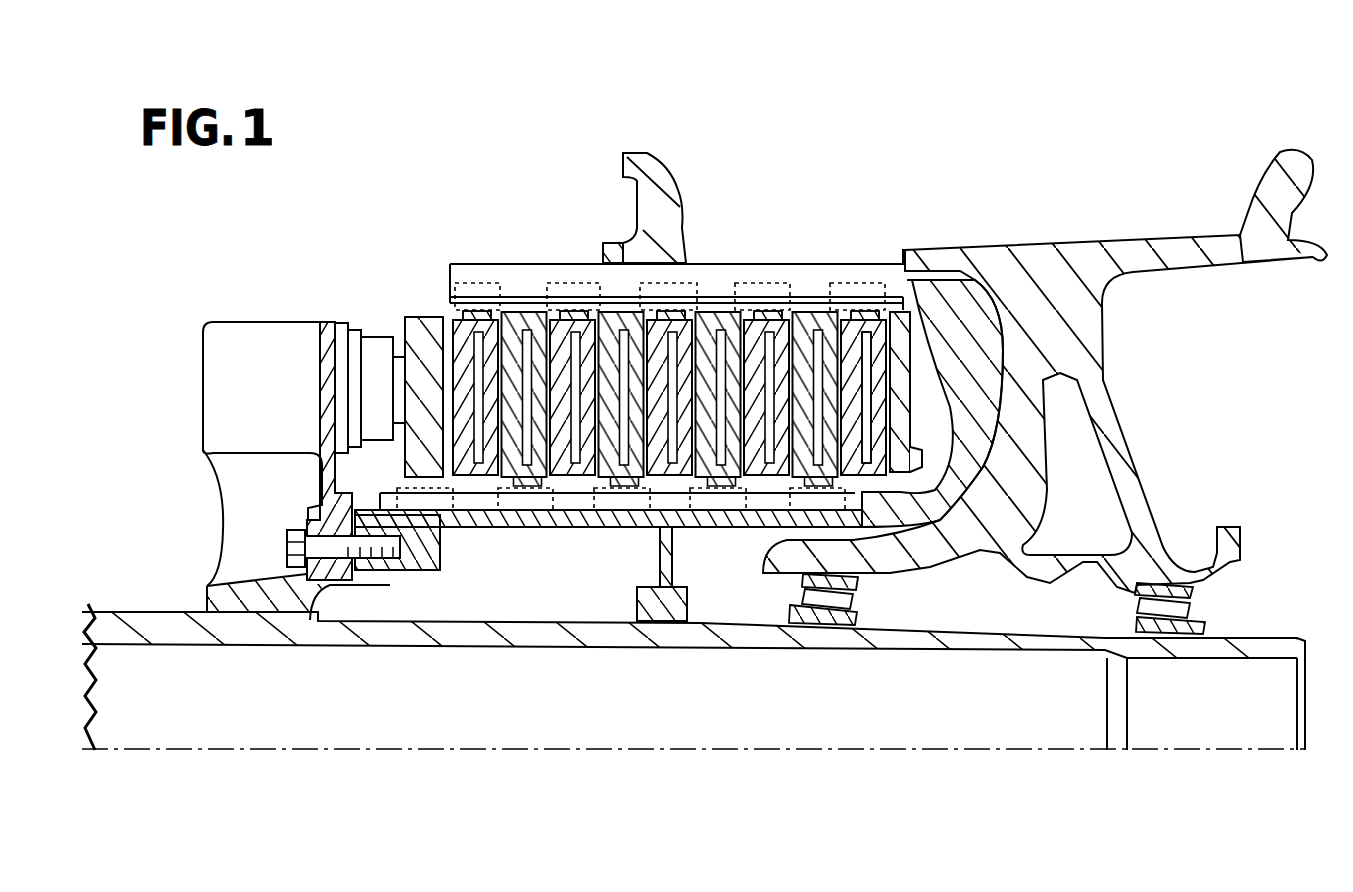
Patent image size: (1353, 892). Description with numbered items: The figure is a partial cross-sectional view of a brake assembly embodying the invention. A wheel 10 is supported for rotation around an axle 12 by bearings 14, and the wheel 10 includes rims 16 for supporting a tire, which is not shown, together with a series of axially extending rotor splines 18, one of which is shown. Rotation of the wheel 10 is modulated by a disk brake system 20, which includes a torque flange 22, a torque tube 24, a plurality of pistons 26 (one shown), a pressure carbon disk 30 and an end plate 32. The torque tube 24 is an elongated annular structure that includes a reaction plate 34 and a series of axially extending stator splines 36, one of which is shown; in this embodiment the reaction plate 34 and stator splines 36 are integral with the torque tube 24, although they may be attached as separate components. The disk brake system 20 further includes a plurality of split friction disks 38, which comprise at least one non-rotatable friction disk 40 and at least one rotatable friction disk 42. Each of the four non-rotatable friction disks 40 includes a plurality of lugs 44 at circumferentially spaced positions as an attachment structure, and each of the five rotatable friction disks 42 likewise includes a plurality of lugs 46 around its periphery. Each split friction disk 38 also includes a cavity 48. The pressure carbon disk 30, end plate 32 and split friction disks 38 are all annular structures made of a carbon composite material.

The wheel 10 is at (1136, 206).
The axle 12 is at (1005, 634).
The bearings 14 is at (870, 603).
The rims 16 is at (670, 166).
The rotor splines 18 is at (620, 273).
The disk brake system 20 is at (372, 282).
The torque flange 22 is at (320, 508).
The torque tube 24 is at (517, 538).
The pistons 26 is at (378, 343).
The pressure carbon disk 30 is at (420, 332).
The end plate 32 is at (905, 300).
The reaction plate 34 is at (948, 447).
The stator splines 36 is at (578, 512).
The split friction disks 38 is at (446, 306).
The non-rotatable friction disk 40 is at (517, 468).
The rotatable friction disk 42 is at (478, 318).
The lugs 44 is at (500, 500).
The lugs 46 is at (504, 290).
The cavity 48 is at (903, 385).